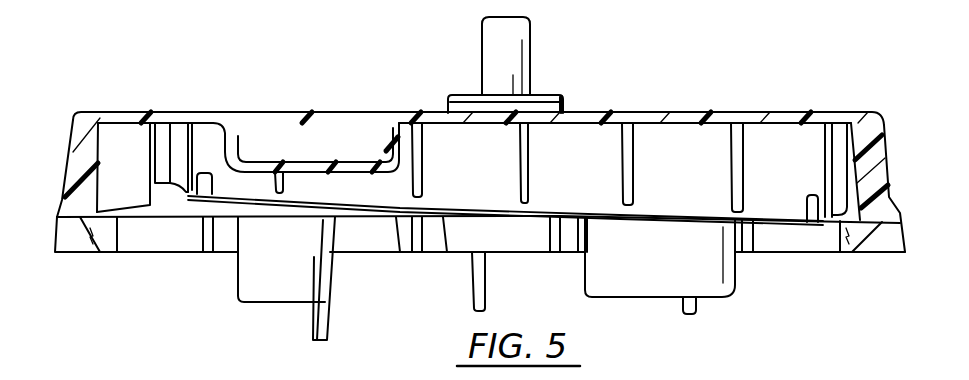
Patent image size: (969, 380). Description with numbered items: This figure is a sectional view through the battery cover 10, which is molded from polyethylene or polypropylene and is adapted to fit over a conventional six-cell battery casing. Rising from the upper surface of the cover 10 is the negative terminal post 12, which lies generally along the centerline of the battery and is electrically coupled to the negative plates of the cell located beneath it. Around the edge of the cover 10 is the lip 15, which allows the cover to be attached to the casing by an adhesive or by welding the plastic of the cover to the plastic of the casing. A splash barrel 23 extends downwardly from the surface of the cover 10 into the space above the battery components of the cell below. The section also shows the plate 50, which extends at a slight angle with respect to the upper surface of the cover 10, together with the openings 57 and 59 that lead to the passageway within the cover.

The cover 10 is at (650, 85).
The negative terminal post 12 is at (530, 43).
The lip 15 is at (52, 222).
The splash barrel 23 is at (238, 294).
The plate 50 is at (398, 212).
The opening 57 is at (200, 195).
The opening 59 is at (812, 221).